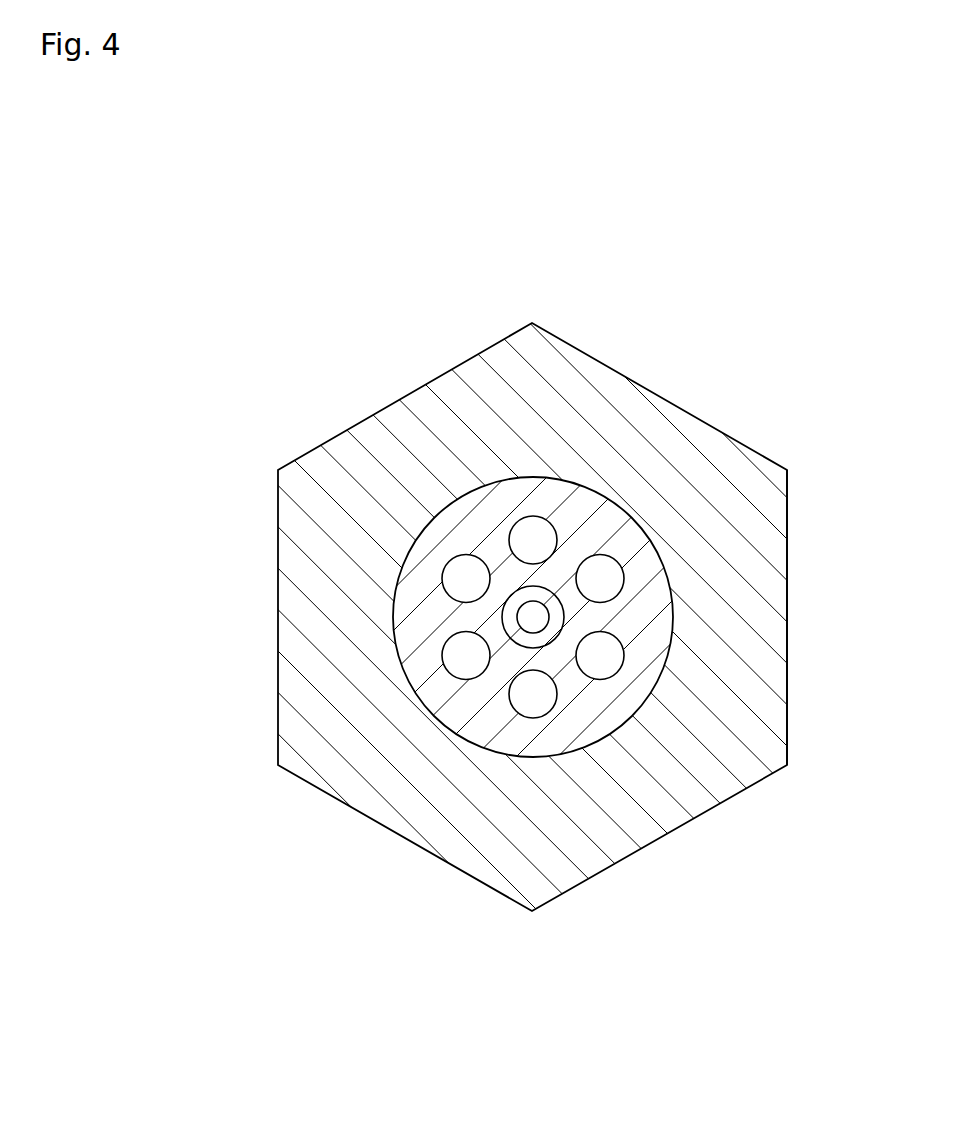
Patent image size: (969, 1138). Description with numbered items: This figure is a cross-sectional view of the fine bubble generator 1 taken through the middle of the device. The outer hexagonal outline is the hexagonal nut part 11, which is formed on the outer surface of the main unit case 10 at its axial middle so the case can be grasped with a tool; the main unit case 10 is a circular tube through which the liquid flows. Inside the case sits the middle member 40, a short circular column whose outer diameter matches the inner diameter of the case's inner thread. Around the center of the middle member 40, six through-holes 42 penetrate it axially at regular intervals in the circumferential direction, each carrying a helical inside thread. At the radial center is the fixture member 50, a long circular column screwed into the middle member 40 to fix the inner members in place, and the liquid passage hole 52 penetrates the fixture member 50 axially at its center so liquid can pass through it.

The fine bubble generator 1 is at (572, 290).
The main unit case 10 is at (332, 436).
The hexagonal nut part 11 is at (667, 437).
The middle member 40 is at (487, 520).
The through-holes 42 is at (467, 578).
The fixture member 50 is at (523, 640).
The liquid passage hole 52 is at (540, 618).